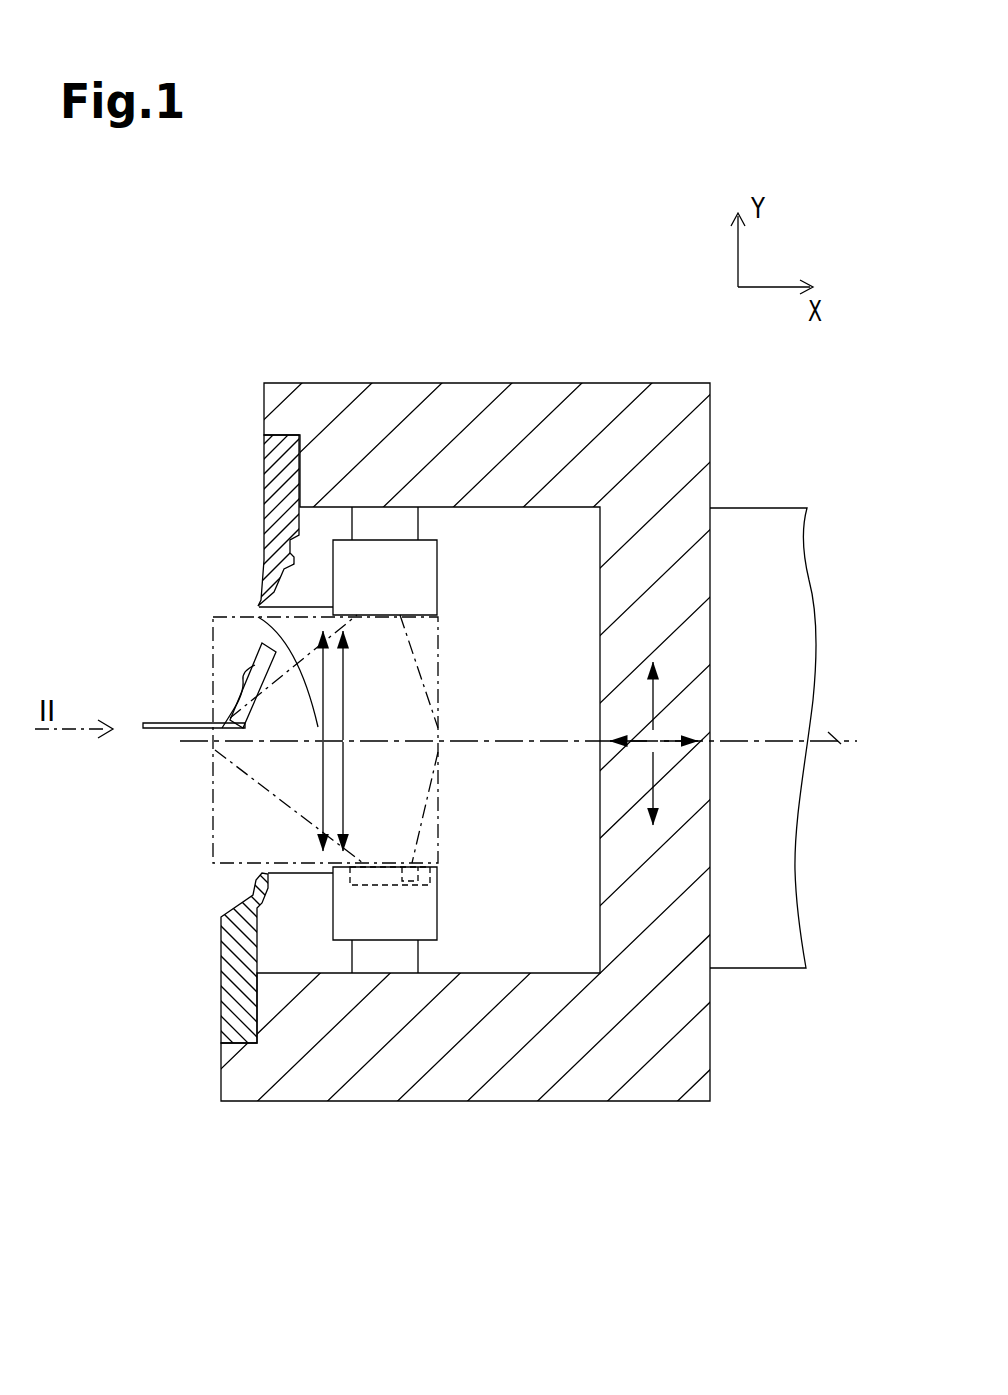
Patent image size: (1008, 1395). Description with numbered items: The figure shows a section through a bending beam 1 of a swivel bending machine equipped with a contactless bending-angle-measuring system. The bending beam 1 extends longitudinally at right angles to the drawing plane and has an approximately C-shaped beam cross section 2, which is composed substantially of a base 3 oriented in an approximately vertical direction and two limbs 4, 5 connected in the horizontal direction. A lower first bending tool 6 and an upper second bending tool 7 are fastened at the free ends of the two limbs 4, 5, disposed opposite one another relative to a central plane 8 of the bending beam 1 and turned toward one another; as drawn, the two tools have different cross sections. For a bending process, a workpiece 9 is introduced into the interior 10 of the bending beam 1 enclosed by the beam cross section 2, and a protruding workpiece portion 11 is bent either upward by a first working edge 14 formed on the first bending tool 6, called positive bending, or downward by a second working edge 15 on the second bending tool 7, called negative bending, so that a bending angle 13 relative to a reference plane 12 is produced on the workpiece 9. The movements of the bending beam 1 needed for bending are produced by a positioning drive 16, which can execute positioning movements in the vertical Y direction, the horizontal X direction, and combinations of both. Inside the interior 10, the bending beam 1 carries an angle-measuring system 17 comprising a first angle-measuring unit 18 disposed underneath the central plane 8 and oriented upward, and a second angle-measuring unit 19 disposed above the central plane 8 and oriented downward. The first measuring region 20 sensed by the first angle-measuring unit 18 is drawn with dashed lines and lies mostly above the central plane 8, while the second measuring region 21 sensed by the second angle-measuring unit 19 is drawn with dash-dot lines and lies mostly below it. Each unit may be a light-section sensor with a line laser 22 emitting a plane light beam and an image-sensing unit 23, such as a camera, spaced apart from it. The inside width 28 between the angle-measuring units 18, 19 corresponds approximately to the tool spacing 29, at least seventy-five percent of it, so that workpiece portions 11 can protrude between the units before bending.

The bending beam 1 is at (653, 208).
The beam cross section 2 is at (678, 514).
The base 3 is at (755, 572).
The limb 4 is at (553, 350).
The limb 5 is at (562, 1113).
The first bending tool 6 is at (197, 1019).
The second bending tool 7 is at (258, 462).
The central plane 8 is at (843, 741).
The workpiece 9 is at (160, 716).
The interior 10 is at (522, 680).
The workpiece portion 11 is at (215, 665).
The reference plane 12 is at (137, 730).
The bending angle 13 is at (258, 617).
The first working edge 14 is at (248, 880).
The second working edge 15 is at (247, 593).
The positioning drive 16 is at (798, 990).
The angle-measuring system 17 is at (475, 622).
The first angle-measuring unit 18 is at (385, 918).
The second angle-measuring unit 19 is at (402, 563).
The first measuring region 20 is at (212, 648).
The second measuring region 21 is at (213, 828).
The line laser 22 is at (420, 888).
The image-sensing unit 23 is at (355, 892).
The inside width 28 is at (346, 688).
The tool spacing 29 is at (318, 779).